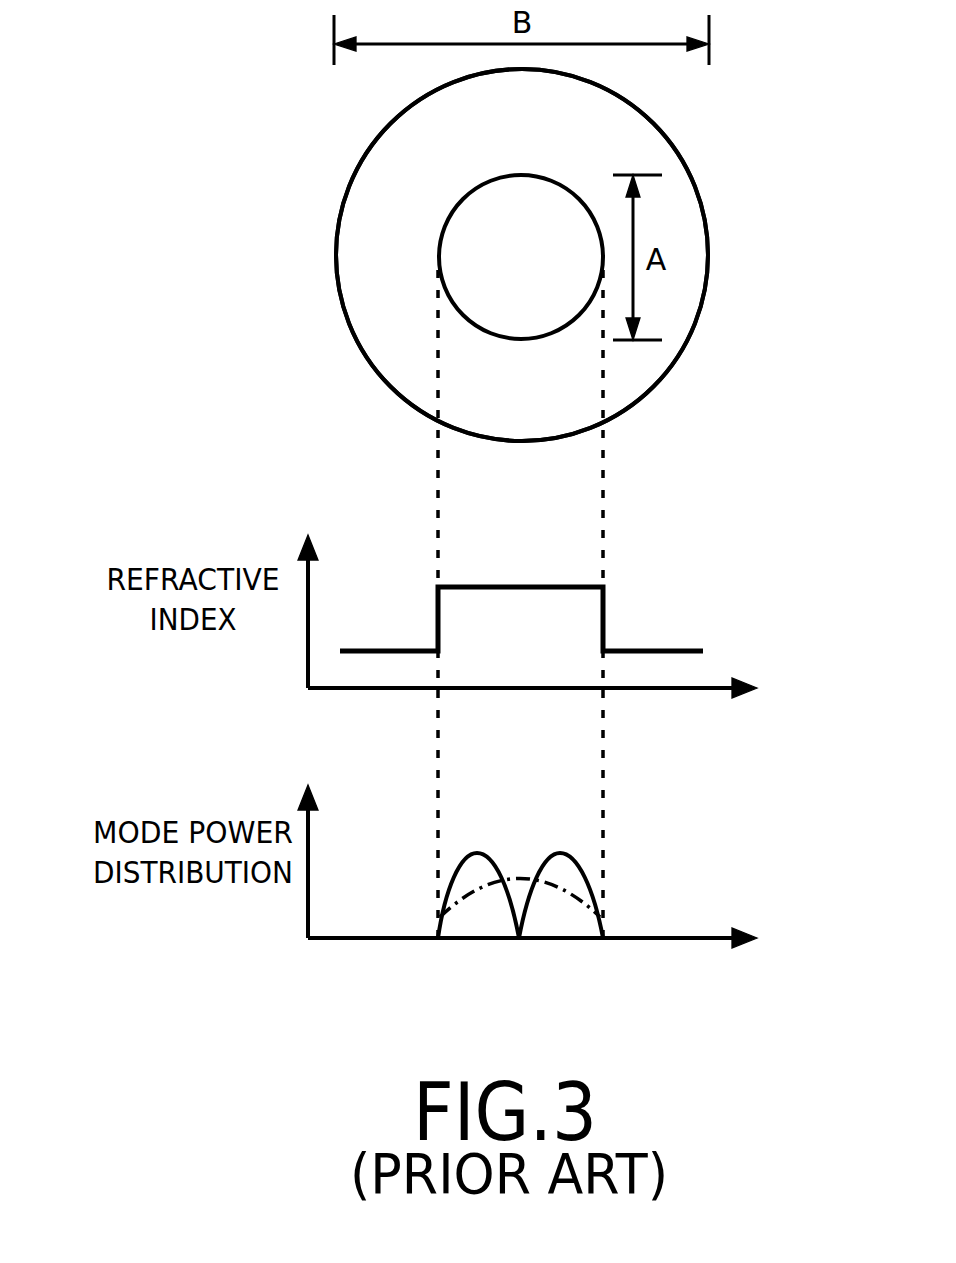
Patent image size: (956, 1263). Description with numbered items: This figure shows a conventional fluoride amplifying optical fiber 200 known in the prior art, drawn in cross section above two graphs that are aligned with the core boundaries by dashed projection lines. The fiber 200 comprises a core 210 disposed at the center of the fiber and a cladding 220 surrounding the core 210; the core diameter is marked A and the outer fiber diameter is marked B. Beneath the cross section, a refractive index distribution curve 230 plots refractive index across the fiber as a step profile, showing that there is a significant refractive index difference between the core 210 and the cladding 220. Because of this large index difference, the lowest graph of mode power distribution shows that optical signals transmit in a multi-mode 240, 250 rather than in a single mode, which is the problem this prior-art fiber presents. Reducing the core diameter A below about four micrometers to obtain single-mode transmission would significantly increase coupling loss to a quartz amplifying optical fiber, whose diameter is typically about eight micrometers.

The fluoride amplifying optical fiber 200 is at (346, 150).
The core 210 is at (453, 230).
The cladding 220 is at (358, 317).
The refractive index distribution curve 230 is at (633, 649).
The multi-mode 240 is at (583, 895).
The multi-mode 250 is at (575, 853).